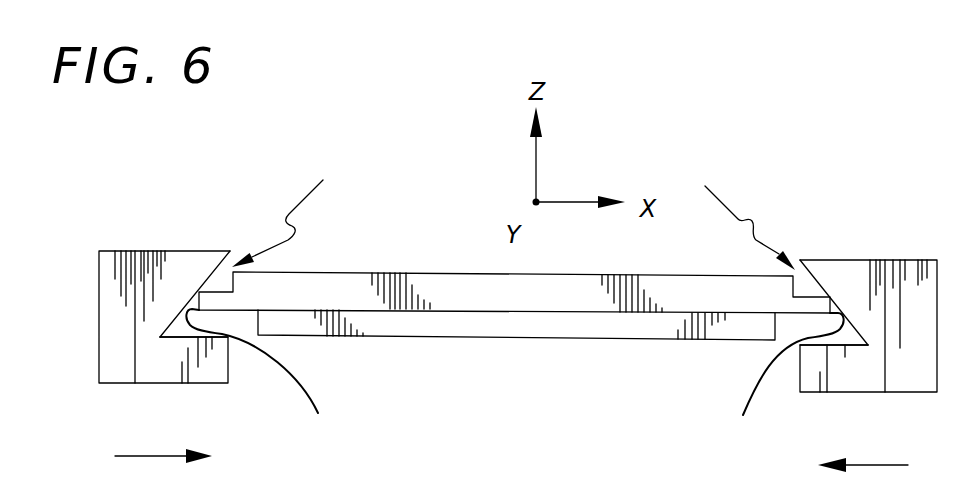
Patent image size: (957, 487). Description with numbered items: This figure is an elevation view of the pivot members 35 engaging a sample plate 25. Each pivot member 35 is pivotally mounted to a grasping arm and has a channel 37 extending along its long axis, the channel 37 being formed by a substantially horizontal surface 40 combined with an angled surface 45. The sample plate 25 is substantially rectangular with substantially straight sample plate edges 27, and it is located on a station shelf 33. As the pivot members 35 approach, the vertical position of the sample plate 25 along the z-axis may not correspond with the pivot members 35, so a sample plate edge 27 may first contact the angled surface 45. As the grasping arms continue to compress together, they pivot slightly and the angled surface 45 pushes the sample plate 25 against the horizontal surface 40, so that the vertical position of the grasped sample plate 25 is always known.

The sample plate 25 is at (470, 273).
The sample plate edge 27 is at (514, 375).
The station shelf 33 is at (618, 330).
The pivot member 35 is at (162, 251).
The channel 37 is at (513, 212).
The horizontal surface 40 is at (210, 337).
The angled surface 45 is at (197, 300).